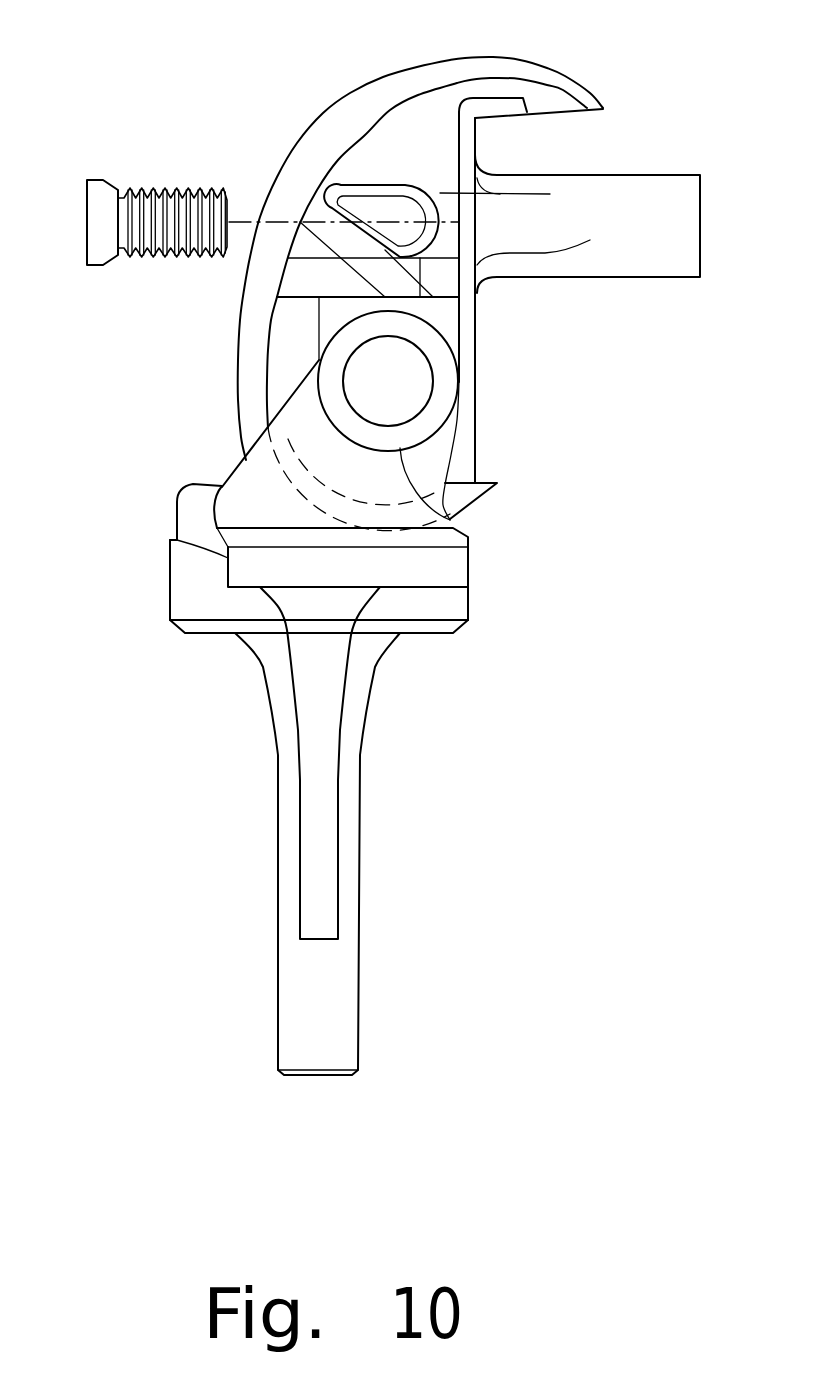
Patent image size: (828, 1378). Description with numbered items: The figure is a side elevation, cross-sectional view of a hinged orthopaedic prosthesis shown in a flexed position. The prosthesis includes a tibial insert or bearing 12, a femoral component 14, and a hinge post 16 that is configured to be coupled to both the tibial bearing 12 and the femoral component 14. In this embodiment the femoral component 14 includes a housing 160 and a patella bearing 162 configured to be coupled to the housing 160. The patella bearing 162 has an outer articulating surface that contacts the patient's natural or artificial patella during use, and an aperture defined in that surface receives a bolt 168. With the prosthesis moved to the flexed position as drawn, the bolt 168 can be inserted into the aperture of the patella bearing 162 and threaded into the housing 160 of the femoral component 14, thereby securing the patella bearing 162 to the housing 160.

The tibial insert or bearing 12 is at (453, 626).
The femoral component 14 is at (647, 180).
The hinge post 16 is at (447, 520).
The housing 160 is at (447, 279).
The patella bearing 162 is at (441, 77).
The bolt 168 is at (163, 195).